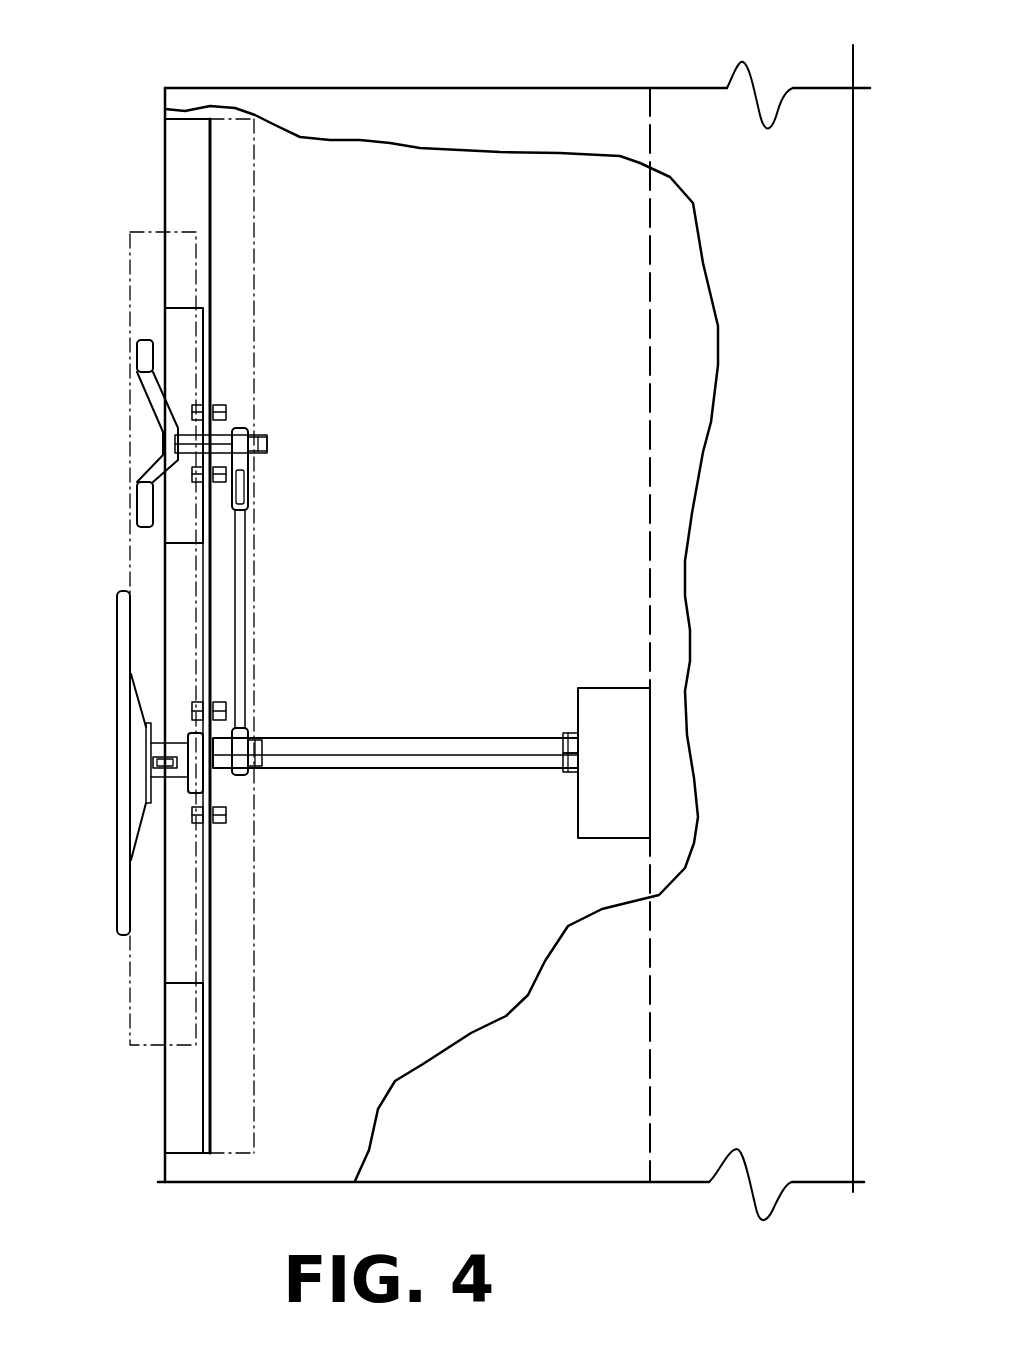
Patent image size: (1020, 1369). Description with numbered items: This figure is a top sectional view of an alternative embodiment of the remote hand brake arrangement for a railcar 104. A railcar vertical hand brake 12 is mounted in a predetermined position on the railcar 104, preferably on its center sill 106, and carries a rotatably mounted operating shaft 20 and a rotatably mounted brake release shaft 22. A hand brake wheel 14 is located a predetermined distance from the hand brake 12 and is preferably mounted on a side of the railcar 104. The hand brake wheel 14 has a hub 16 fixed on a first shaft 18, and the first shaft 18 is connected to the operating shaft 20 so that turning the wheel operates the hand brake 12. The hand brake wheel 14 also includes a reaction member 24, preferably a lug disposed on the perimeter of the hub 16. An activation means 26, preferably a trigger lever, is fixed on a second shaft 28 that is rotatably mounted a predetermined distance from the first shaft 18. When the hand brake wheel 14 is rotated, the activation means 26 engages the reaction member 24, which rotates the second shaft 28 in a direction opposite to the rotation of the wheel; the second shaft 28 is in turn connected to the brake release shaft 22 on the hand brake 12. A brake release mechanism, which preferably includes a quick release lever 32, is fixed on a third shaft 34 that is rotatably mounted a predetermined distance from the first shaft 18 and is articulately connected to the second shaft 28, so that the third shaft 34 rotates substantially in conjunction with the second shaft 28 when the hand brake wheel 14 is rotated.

The railcar 104 is at (498, 72).
The center sill 106 is at (675, 248).
The railcar vertical hand brake 12 is at (605, 660).
The hand brake wheel 14 is at (121, 799).
The hub 16 is at (167, 780).
The first shaft 18 is at (218, 768).
The operating shaft 20 is at (568, 773).
The brake release shaft 22 is at (568, 733).
The reaction member 24 is at (166, 753).
The activation means 26 is at (192, 737).
The second shaft 28 is at (257, 738).
The quick release lever 32 is at (145, 500).
The third shaft 34 is at (263, 437).